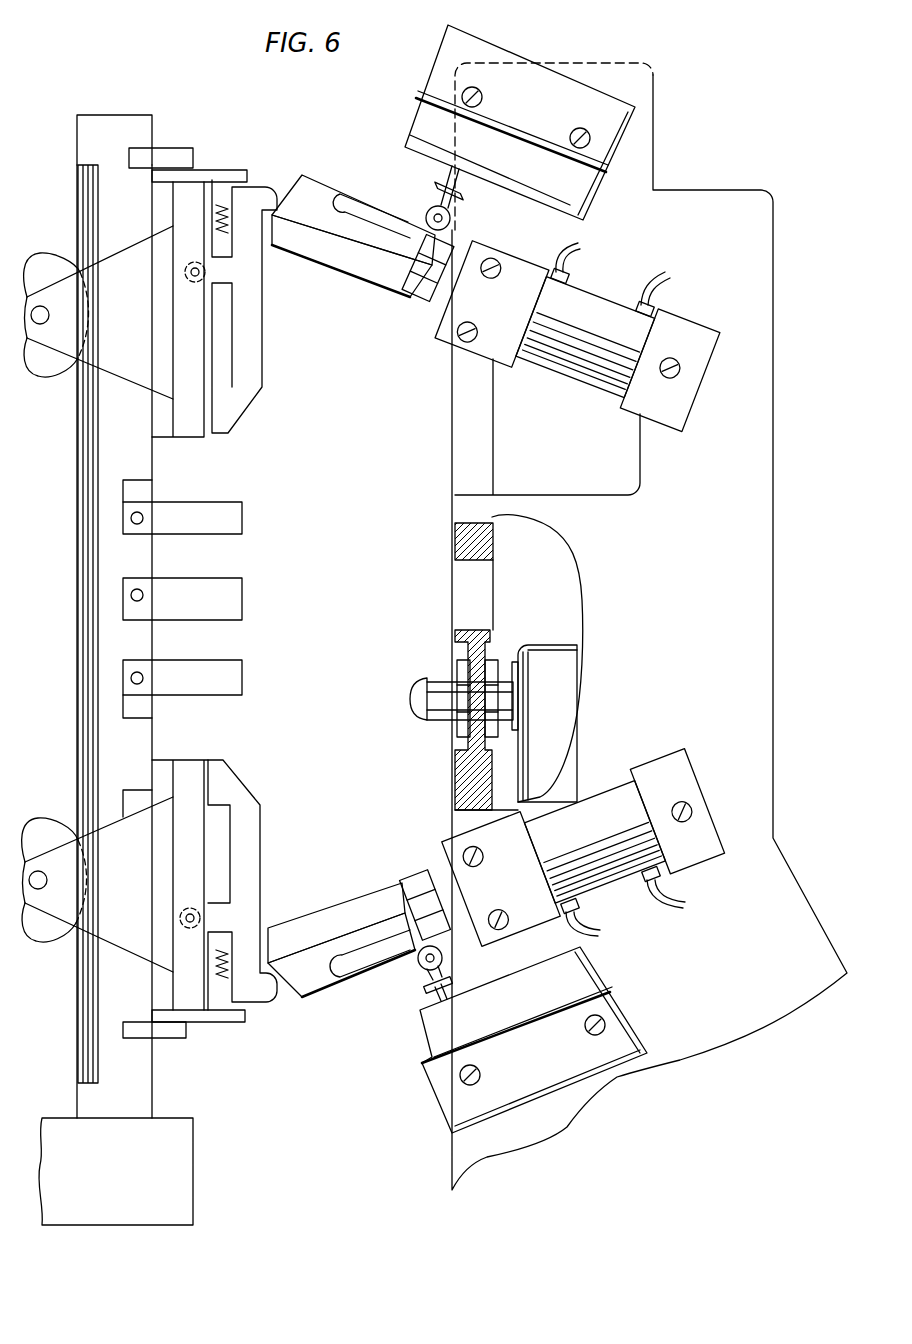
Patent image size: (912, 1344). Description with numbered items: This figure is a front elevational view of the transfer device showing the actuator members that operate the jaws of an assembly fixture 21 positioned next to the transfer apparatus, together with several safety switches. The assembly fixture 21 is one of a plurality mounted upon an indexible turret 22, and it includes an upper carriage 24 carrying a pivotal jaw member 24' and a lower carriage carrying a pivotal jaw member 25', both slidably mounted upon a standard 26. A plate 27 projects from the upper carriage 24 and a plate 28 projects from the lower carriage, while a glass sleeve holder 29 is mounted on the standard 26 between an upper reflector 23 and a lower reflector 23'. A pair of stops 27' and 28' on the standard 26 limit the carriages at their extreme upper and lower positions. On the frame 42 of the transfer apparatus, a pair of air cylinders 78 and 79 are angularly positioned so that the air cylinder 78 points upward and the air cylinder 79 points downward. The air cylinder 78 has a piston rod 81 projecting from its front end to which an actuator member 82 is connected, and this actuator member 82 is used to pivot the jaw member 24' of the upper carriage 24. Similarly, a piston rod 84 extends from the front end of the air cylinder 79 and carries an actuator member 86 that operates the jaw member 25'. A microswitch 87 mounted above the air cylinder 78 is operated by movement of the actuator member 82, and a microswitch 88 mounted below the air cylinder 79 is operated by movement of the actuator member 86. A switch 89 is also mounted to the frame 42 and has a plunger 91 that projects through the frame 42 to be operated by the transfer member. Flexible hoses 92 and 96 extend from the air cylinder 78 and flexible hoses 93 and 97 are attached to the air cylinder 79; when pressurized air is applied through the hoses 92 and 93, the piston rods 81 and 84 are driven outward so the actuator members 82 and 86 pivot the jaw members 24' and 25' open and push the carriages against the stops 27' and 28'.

The assembly fixture 21 is at (168, 128).
The indexible turret 22 is at (178, 1148).
The upper reflector 23 is at (199, 500).
The lower reflector 23' is at (216, 683).
The upper carriage 24 is at (98, 326).
The pivotal jaw member 24' is at (238, 308).
The pivotal jaw member 25' is at (240, 885).
The standard 26 is at (110, 450).
The plate 27 is at (215, 152).
The stop 27' is at (190, 133).
The plate 28 is at (223, 1031).
The stop 28' is at (175, 1052).
The glass sleeve holder 29 is at (228, 600).
The frame 42 is at (693, 205).
The air cylinder 78 is at (588, 373).
The air cylinder 79 is at (583, 805).
The piston rod 81 is at (437, 300).
The actuator member 82 is at (310, 250).
The piston rod 84 is at (440, 883).
The actuator member 86 is at (323, 915).
The microswitch 87 is at (555, 85).
The microswitch 88 is at (623, 1030).
The switch 89 is at (537, 660).
The plunger 91 is at (410, 691).
The flexible hose 92 is at (673, 288).
The flexible hose 93 is at (680, 908).
The flexible hose 96 is at (573, 254).
The flexible hose 97 is at (603, 937).